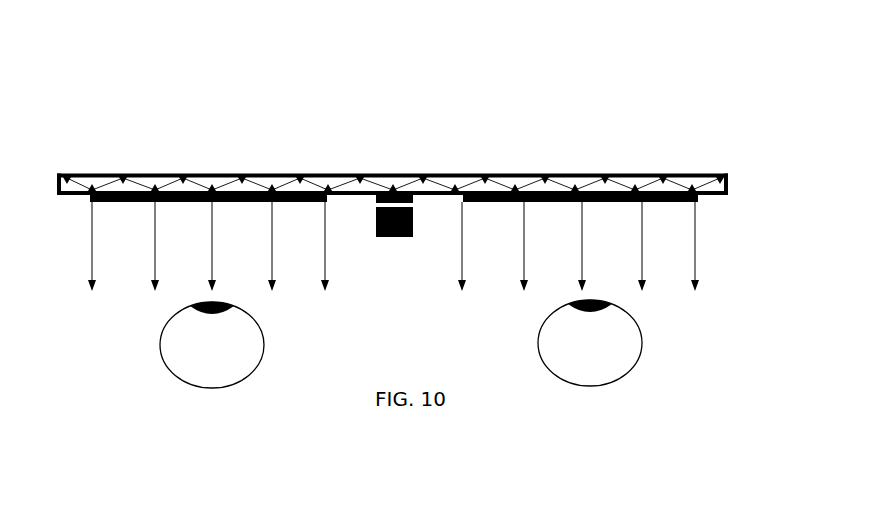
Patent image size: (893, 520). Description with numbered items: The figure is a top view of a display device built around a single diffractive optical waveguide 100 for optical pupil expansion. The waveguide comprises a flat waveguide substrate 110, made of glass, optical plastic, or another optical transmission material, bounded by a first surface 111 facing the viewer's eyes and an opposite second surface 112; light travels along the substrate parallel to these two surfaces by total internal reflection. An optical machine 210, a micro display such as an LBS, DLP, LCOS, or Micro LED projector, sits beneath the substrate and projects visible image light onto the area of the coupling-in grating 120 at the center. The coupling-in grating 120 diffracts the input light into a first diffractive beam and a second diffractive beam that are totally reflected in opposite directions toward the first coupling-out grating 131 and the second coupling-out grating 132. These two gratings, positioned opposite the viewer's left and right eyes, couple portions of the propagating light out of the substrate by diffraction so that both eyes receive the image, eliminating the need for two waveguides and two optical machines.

The diffractive optical waveguide 100 is at (402, 95).
The waveguide substrate 110 is at (220, 178).
The first surface 111 is at (722, 198).
The second surface 112 is at (708, 170).
The coupling-in grating 120 is at (424, 192).
The first coupling-out grating 131 is at (150, 177).
The second coupling-out grating 132 is at (550, 194).
The optical machine 210 is at (393, 238).